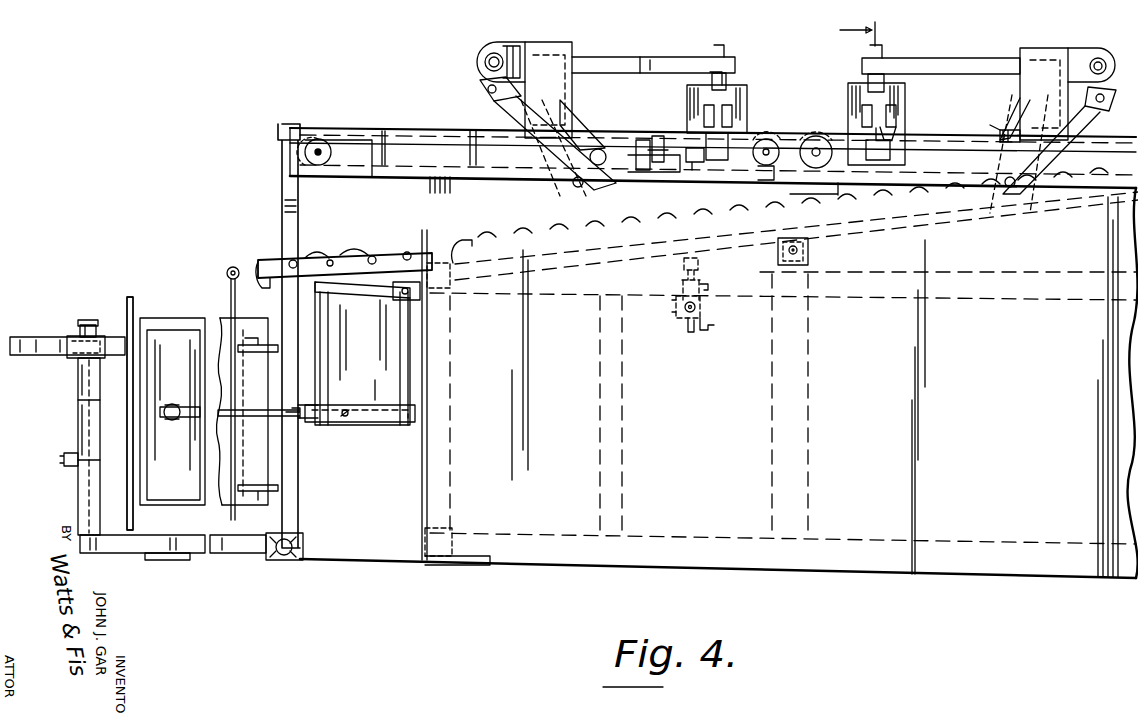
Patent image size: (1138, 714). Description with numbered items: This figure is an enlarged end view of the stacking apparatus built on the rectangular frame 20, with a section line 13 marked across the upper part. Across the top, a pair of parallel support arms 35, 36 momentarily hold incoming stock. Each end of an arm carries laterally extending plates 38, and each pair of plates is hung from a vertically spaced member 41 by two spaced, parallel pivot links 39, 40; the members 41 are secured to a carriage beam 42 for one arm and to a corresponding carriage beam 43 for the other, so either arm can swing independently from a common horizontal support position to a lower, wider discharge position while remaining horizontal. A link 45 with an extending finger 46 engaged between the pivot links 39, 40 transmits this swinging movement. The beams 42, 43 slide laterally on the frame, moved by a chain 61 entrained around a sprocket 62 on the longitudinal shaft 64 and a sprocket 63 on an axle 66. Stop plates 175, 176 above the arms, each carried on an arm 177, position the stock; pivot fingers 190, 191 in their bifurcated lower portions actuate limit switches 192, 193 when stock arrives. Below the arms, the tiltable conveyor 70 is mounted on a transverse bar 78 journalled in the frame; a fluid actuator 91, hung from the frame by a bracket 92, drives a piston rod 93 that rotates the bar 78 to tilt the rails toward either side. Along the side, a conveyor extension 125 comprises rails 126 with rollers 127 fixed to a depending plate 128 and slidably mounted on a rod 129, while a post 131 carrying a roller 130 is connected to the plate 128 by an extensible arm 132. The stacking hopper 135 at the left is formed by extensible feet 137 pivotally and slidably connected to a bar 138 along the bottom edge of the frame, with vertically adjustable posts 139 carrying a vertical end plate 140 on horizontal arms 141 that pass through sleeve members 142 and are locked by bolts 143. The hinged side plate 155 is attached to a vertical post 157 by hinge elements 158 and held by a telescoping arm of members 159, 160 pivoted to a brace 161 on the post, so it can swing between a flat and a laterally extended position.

The frame 20 is at (586, 581).
The section line 13 is at (832, 108).
The support arm 35 is at (652, 136).
The support arm 36 is at (1000, 138).
The laterally extending plates 38 is at (640, 172).
The pivot link 39 is at (496, 104).
The pivot link 40 is at (562, 110).
The vertically spaced member 41 is at (482, 83).
The carriage beam 42 is at (560, 42).
The carriage beam 43 is at (1046, 50).
The link 45 is at (554, 182).
The finger 46 is at (990, 214).
The chain 61 is at (600, 148).
The sprocket 62 is at (316, 131).
The sprocket 63 is at (786, 138).
The shaft 64 is at (306, 153).
The axle 66 is at (766, 182).
The conveyor 70 is at (506, 232).
The bar 78 is at (806, 268).
The fluid actuator 91 is at (692, 338).
The bracket 92 is at (684, 318).
The piston rod 93 is at (682, 272).
The conveyor extension 125 is at (350, 252).
The rail 126 is at (374, 256).
The roller 127 is at (326, 262).
The depending plate 128 is at (366, 420).
The rod 129 is at (410, 252).
The roller 130 is at (234, 267).
The post 131 is at (230, 310).
The extensible arm 132 is at (244, 420).
The stacking hopper 135 is at (154, 268).
The extensible foot 137 is at (128, 554).
The bar 138 is at (282, 561).
The vertically adjustable post 139 is at (78, 384).
The vertical end plate 140 is at (120, 300).
The horizontal arm 141 is at (10, 337).
The sleeve member 142 is at (70, 337).
The bolt 143 is at (88, 320).
The side plate 155 is at (172, 328).
The vertical post 157 is at (282, 205).
The hinge element 158 is at (250, 340).
The telescoping member 159 is at (186, 407).
The telescoping member 160 is at (248, 410).
The brace 161 is at (300, 408).
The stop plate 175 is at (748, 85).
The stop plate 176 is at (848, 90).
The arm 177 is at (638, 57).
The pivot finger 190 is at (740, 118).
The pivot finger 191 is at (866, 118).
The limit switch 192 is at (700, 170).
The limit switch 193 is at (896, 128).